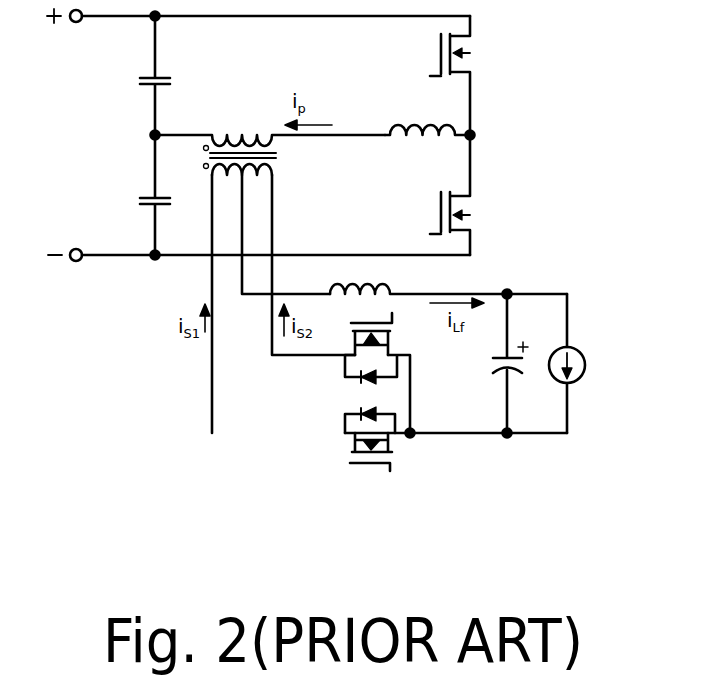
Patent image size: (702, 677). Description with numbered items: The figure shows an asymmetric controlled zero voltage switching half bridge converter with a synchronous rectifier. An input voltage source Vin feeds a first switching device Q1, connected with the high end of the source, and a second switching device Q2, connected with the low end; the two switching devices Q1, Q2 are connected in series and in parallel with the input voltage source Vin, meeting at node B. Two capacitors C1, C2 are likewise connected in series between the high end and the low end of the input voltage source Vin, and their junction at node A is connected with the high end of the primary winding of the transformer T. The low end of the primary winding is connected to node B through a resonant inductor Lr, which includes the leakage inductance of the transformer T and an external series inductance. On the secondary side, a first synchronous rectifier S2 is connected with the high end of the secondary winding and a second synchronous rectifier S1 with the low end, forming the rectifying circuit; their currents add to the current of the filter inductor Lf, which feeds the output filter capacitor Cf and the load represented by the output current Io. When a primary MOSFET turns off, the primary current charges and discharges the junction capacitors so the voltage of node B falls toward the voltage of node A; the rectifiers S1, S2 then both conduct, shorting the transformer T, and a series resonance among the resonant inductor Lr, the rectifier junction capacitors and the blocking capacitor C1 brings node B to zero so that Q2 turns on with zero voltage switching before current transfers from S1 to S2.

The input voltage source Vin is at (53, 136).
The node A is at (142, 136).
The node B is at (483, 136).
The blocking capacitor C1 is at (170, 75).
The second series capacitor C2 is at (170, 195).
The transformer T is at (270, 155).
The resonant inductor Lr is at (427, 109).
The first switching device Q1 is at (469, 75).
The second switching device Q2 is at (469, 195).
The filter inductor Lf is at (448, 276).
The second synchronous rectifier S1 is at (456, 445).
The first synchronous rectifier S2 is at (385, 373).
The output filter capacitor Cf is at (500, 363).
The output current Io is at (576, 363).